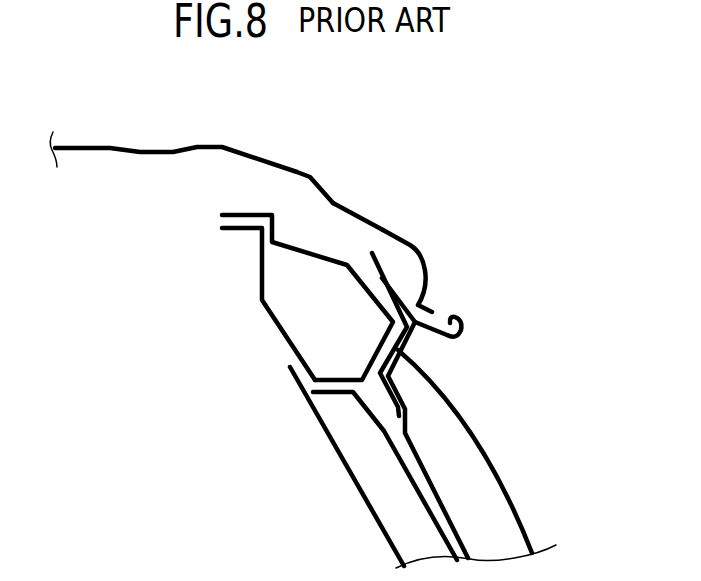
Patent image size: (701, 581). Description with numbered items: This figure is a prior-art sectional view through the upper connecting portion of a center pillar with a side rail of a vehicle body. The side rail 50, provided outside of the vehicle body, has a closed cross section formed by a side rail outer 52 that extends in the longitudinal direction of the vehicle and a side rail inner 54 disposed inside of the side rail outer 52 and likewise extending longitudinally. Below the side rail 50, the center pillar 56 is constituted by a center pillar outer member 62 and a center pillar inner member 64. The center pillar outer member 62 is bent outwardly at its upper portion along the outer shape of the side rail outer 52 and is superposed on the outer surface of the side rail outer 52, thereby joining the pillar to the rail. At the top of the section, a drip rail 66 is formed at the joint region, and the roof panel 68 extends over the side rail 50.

The side rail 50 is at (282, 199).
The side rail outer 52 is at (323, 255).
The side rail inner 54 is at (283, 334).
The center pillar 56 is at (464, 410).
The center pillar outer member 62 is at (462, 405).
The center pillar inner member 64 is at (385, 523).
The drip rail 66 is at (452, 338).
The roof panel 68 is at (346, 205).